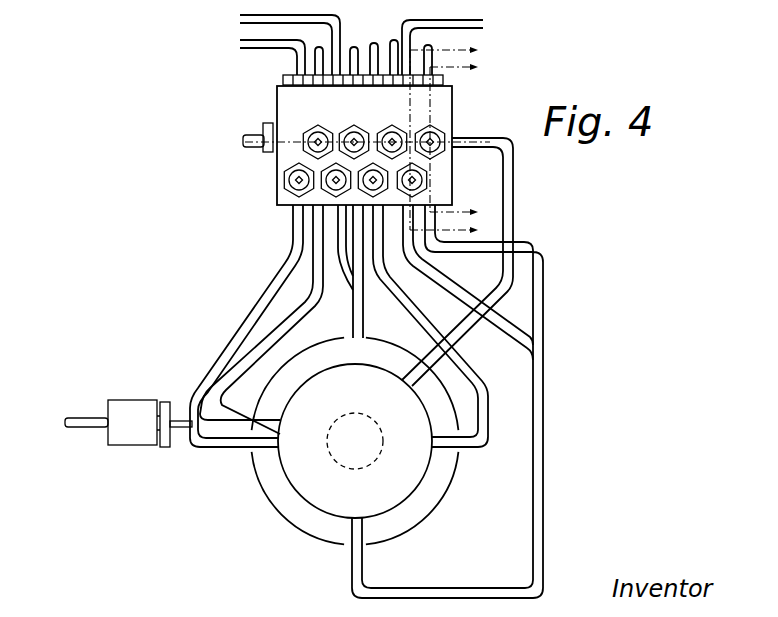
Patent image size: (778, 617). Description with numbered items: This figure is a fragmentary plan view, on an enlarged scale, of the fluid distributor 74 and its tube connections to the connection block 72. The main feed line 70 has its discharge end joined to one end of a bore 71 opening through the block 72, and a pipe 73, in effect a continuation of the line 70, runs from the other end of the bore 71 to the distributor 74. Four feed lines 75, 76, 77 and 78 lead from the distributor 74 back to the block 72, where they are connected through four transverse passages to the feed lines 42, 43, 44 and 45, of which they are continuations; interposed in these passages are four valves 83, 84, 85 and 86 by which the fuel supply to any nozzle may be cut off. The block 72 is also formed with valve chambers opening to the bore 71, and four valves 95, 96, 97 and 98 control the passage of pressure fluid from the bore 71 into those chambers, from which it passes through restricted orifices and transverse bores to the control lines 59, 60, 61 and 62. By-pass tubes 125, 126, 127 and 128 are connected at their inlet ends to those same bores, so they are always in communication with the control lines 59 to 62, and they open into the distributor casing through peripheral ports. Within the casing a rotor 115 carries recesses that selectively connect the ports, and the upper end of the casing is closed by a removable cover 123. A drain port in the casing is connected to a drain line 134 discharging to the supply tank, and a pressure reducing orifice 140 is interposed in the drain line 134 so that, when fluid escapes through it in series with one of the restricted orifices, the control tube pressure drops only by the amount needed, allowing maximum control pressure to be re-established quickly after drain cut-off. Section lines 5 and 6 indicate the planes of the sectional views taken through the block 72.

The section line 5- 5 is at (450, 140).
The section line 6- 6 is at (460, 140).
The feed line 42 is at (471, 24).
The feed line 43 is at (373, 43).
The feed line 44 is at (337, 28).
The feed line 45 is at (289, 47).
The control line 59 is at (432, 45).
The control line 60 is at (396, 40).
The control line 61 is at (355, 46).
The control line 62 is at (319, 48).
The main feed line 70 is at (248, 144).
The bore 71 is at (269, 153).
The connection block 72 is at (453, 103).
The pipe 73 is at (513, 204).
The fluid distributor 74 is at (280, 514).
The feed line 75 is at (438, 589).
The feed line 76 is at (489, 422).
The feed line 77 is at (364, 322).
The feed line 78 is at (222, 447).
The valve 83 is at (420, 178).
The valve 84 is at (383, 193).
The valve 85 is at (332, 182).
The valve 86 is at (296, 181).
The valve 95 is at (445, 140).
The valve 96 is at (394, 128).
The valve 97 is at (357, 128).
The valve 98 is at (318, 128).
The rotor 115 is at (350, 470).
The removable cover 123 is at (428, 499).
The by-pass tube 125 is at (545, 305).
The by-pass tube 126 is at (458, 358).
The by-pass tube 127 is at (360, 278).
The by-pass tube 128 is at (260, 352).
The drain line 134 is at (80, 428).
The pressure reducing orifice 140 is at (135, 404).